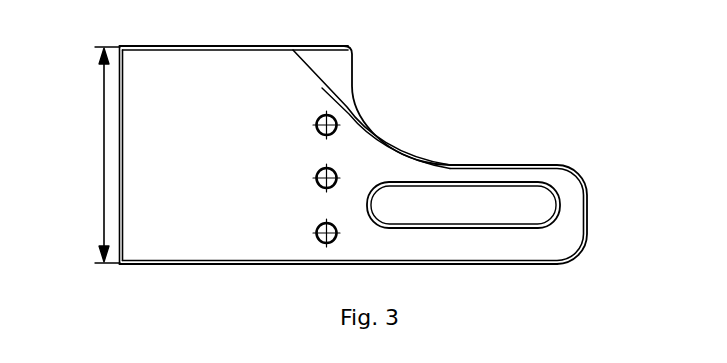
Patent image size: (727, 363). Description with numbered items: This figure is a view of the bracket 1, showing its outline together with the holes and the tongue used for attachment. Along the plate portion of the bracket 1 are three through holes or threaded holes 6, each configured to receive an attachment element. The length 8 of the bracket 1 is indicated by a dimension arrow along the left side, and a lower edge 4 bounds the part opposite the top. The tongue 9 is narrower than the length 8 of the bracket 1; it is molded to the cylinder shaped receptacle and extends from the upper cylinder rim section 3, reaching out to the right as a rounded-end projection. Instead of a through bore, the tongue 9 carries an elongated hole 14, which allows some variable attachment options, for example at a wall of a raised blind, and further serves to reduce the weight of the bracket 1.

The bracket 1 is at (462, 108).
The upper cylinder rim section 3 is at (200, 47).
The bottom edge 4 is at (203, 265).
The through hole or threaded hole 6 is at (320, 117).
The length 8 is at (104, 147).
The tongue 9 is at (497, 247).
The elongated hole 14 is at (538, 208).